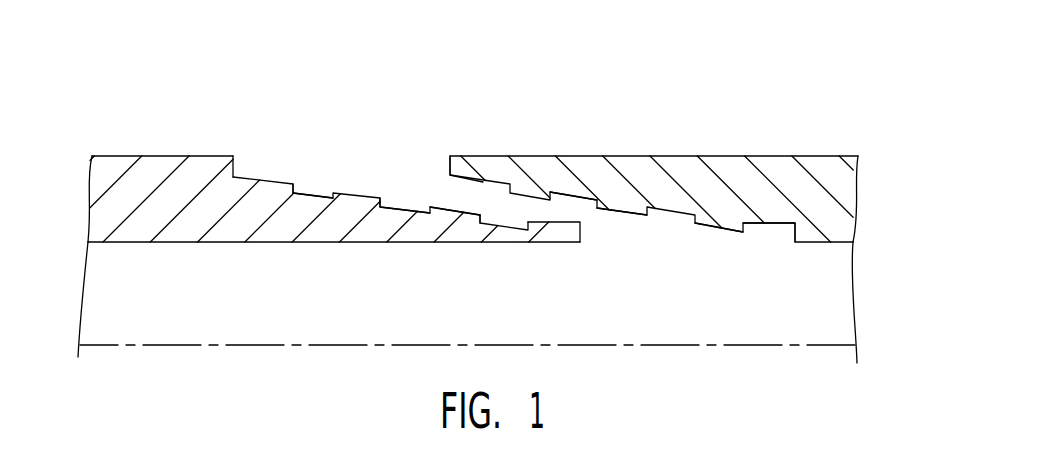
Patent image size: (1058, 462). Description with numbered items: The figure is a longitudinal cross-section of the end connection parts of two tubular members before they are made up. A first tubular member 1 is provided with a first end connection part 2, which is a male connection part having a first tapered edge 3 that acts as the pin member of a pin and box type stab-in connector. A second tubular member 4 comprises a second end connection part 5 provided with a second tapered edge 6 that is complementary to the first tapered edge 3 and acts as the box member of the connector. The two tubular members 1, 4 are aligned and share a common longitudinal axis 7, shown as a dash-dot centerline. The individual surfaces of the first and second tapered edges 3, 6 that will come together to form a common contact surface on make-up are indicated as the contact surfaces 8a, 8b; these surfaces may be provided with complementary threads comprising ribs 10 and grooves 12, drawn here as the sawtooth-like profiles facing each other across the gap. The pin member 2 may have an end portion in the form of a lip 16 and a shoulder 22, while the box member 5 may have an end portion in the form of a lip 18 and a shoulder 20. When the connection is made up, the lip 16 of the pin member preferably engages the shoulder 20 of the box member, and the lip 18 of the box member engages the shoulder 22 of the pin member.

The first tubular member 1 is at (168, 138).
The first end connection part 2 is at (282, 243).
The first tapered edge 3 is at (355, 193).
The second tubular member 4 is at (760, 140).
The second end connection part 5 is at (660, 178).
The second tapered edge 6 is at (573, 200).
The longitudinal axis 7 is at (117, 345).
The contact surface of first tapered edge 8a is at (443, 208).
The contact surface of second tapered edge 8b is at (505, 186).
The ribs 10 is at (623, 212).
The grooves 12 is at (310, 190).
The lip 16 is at (555, 233).
The lip 18 is at (467, 168).
The shoulder 20 is at (780, 243).
The shoulder 22 is at (237, 166).